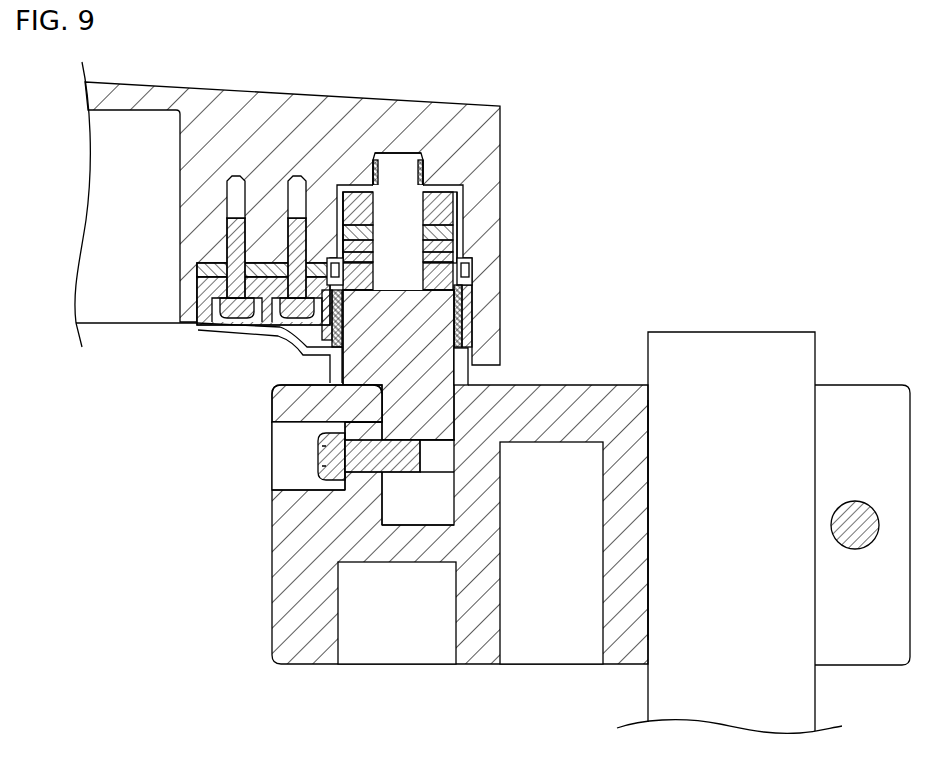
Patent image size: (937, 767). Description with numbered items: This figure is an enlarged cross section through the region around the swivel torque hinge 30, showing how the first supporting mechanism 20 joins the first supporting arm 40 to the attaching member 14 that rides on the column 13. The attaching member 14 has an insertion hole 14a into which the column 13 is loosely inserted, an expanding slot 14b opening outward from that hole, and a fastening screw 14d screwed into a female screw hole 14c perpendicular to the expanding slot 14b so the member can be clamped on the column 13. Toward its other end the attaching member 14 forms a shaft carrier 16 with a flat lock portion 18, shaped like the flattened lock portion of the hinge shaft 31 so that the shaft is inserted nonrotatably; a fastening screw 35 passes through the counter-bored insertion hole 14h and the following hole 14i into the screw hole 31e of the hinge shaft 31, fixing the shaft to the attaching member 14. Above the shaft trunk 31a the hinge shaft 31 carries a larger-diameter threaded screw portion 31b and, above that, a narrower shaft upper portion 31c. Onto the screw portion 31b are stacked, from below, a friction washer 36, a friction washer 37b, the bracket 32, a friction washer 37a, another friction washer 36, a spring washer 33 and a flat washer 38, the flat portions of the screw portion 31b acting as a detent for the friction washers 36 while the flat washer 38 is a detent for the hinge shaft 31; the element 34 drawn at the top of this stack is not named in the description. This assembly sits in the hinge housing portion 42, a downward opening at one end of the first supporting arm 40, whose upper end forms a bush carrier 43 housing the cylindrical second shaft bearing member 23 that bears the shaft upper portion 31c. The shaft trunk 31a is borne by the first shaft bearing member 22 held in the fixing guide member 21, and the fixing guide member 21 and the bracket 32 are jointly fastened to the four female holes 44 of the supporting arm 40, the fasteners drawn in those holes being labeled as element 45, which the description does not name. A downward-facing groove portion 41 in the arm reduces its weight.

The column 13 is at (816, 355).
The attaching member 14 is at (463, 524).
The insertion hole 14a is at (650, 455).
The expanding slot 14b is at (852, 410).
The female screw hole 14c is at (833, 523).
The fastening screw 14d is at (842, 548).
The insertion hole 14h is at (322, 490).
The hole 14i is at (322, 460).
The shaft carrier 16 is at (445, 490).
The lock portion 18 is at (445, 522).
The first supporting mechanism 20 is at (221, 256).
The fixing guide member 21 is at (200, 300).
The first shaft bearing member 22 is at (470, 330).
The second shaft bearing member 23 is at (427, 163).
The swivel torque hinge 30 is at (472, 204).
The hinge shaft 31 is at (313, 365).
The shaft trunk 31a is at (418, 390).
The screw portion 31b is at (415, 267).
The shaft upper portion 31c is at (418, 168).
The screw hole 31e is at (425, 455).
The bracket 32 is at (200, 268).
The spring washer 33 is at (453, 242).
The nut 34 is at (463, 207).
The screw 35 is at (322, 442).
The friction washer 36 is at (453, 258).
The friction washer 37a is at (460, 266).
The friction washer 37b is at (458, 277).
The flat washer 38 is at (457, 233).
The first supporting arm 40 is at (210, 117).
The groove portion 41 is at (97, 324).
The hinge housing portion 42 is at (283, 357).
The bush carrier 43 is at (400, 148).
The female holes 44 is at (287, 206).
The terminal pin threaded portion 45 is at (286, 238).